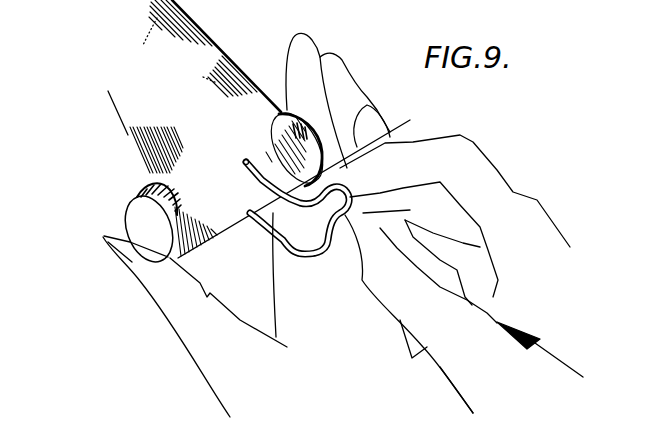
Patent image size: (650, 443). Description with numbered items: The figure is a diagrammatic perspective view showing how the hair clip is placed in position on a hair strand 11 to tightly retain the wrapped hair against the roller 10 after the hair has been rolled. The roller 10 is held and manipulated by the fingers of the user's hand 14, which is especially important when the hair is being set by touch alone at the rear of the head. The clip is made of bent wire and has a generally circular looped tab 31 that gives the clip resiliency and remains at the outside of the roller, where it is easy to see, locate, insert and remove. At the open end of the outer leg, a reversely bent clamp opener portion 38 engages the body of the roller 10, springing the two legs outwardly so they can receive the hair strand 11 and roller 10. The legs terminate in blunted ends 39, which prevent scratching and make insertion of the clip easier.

The roller 10 is at (115, 210).
The hair strand 11 is at (132, 112).
The hand 14 is at (530, 206).
The looped tab 31 is at (400, 143).
The clamp opener portion 38 is at (243, 222).
The blunted ends 39 is at (246, 162).